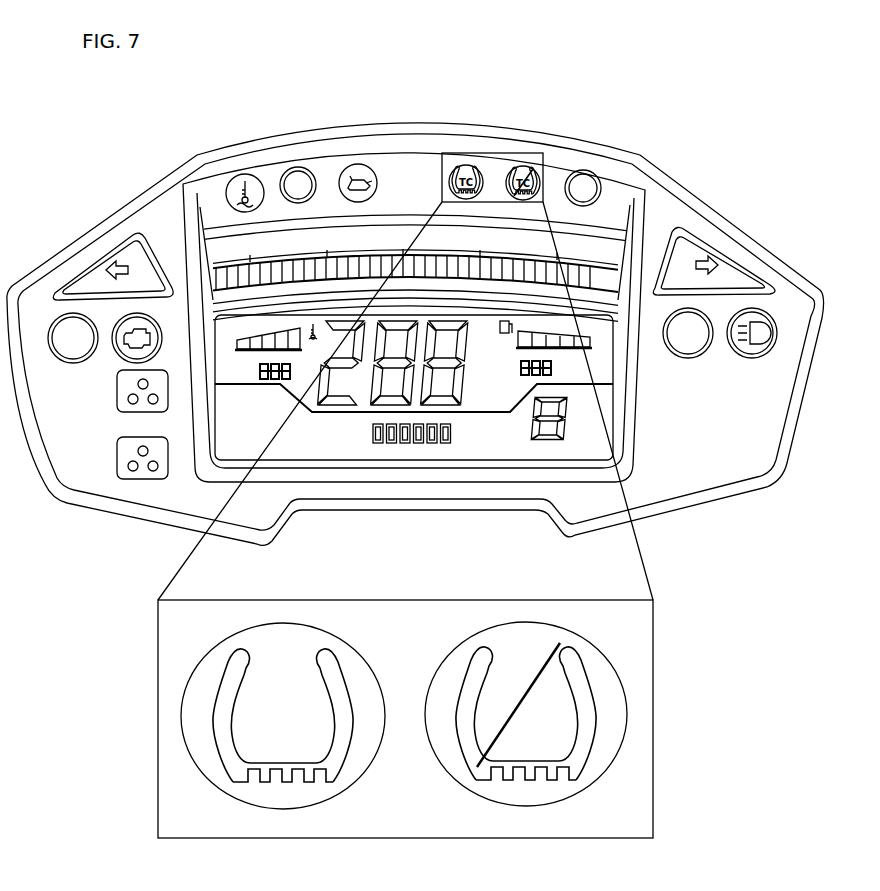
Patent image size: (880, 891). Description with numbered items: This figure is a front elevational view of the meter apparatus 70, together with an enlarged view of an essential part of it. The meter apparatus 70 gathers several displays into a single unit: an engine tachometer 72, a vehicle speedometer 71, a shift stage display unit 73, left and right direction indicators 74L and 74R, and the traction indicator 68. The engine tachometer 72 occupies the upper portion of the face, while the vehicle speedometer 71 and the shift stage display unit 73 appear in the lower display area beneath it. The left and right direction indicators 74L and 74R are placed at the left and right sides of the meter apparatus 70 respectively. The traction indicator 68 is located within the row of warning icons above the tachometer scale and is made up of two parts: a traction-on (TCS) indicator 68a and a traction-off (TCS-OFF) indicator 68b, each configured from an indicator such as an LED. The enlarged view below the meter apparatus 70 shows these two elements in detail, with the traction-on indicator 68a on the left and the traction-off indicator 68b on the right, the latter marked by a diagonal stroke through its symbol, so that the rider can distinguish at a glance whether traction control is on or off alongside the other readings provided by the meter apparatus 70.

The meter apparatus 70 is at (668, 165).
The engine tachometer 72 is at (389, 157).
The traction indicator 68 is at (497, 153).
The traction-on (TCS) indicator 68a is at (196, 764).
The traction-off (TCS-OFF) indicator 68b is at (628, 740).
The vehicle speedometer 71 is at (468, 406).
The shift stage display unit 73 is at (565, 441).
The left direction indicator 74L is at (97, 273).
The right direction indicator 74R is at (730, 273).